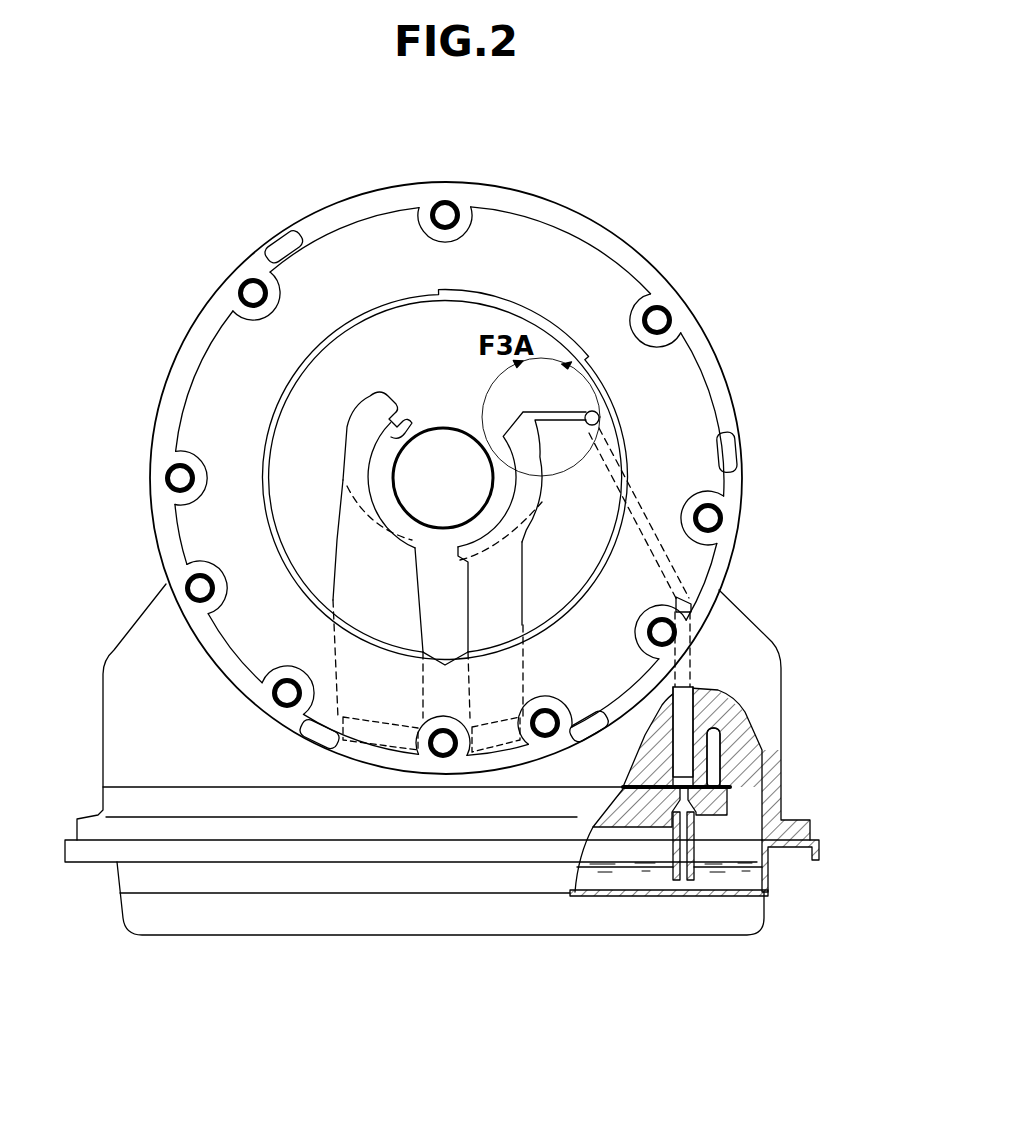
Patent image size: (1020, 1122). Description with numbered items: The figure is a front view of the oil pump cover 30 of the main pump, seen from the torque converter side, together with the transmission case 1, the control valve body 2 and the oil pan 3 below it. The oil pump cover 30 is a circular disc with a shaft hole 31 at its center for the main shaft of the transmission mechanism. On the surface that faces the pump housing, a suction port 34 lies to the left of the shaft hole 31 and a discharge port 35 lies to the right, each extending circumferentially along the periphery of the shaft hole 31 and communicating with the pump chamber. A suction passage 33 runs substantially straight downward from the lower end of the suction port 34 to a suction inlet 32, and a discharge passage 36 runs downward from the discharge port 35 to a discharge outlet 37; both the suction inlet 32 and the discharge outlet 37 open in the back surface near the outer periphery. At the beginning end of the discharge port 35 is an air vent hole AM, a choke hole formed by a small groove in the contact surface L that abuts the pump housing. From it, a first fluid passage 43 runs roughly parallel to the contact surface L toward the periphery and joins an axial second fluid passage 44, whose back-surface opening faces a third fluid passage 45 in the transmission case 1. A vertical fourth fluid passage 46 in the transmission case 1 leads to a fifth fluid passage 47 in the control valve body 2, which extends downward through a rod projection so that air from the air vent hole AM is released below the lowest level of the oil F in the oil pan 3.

The transmission case 1 is at (782, 658).
The control valve body 2 is at (638, 828).
The oil pan 3 is at (765, 902).
The oil pump cover 30 is at (356, 232).
The shaft hole 31 is at (433, 440).
The suction inlet 32 is at (365, 742).
The suction passage 33 is at (352, 555).
The suction port 34 is at (360, 418).
The discharge port 35 is at (528, 490).
The discharge passage 36 is at (510, 575).
The discharge outlet 37 is at (495, 745).
The first fluid passage 43 is at (642, 510).
The second fluid passage 44 is at (765, 640).
The third fluid passage 45 is at (705, 597).
The fourth fluid passage 46 is at (685, 713).
The fifth fluid passage 47 is at (696, 845).
The contact surface L is at (480, 308).
The air vent hole AM is at (560, 412).
The oil F is at (715, 878).